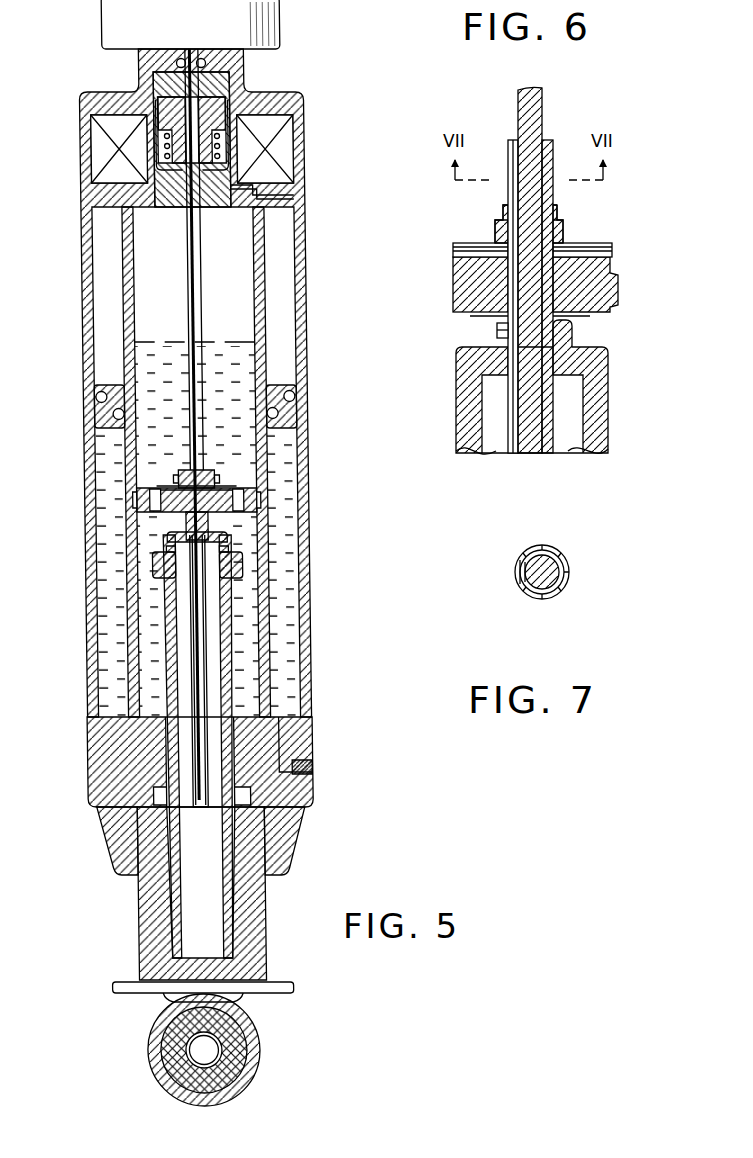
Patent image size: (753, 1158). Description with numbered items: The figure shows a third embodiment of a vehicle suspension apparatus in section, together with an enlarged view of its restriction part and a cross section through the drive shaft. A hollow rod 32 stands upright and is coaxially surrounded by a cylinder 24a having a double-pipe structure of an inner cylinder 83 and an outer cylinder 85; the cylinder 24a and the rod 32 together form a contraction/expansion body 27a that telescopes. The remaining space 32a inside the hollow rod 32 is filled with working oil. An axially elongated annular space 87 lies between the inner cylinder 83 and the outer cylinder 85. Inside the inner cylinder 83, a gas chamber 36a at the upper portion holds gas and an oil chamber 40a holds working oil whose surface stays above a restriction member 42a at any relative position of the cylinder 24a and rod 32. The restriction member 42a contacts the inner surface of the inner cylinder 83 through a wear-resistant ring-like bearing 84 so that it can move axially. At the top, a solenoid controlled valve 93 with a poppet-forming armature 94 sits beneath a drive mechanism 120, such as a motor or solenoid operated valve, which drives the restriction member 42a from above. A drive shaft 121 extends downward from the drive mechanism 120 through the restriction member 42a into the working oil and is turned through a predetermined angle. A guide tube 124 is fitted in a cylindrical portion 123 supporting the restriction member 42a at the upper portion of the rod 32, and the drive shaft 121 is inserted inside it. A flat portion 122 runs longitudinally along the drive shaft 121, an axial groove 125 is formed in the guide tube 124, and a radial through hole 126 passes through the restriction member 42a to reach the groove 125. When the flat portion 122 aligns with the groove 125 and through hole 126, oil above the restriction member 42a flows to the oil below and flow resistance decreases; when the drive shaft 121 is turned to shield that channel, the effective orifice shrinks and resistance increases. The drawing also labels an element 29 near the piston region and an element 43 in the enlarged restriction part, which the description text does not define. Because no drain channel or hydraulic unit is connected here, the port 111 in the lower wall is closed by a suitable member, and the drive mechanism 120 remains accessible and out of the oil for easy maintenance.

In FIG. 5, the drive mechanism 120 is at (89, 15).
In FIG. 5, the armature 94 is at (223, 133).
In FIG. 5, the solenoid controlled valve 93 is at (157, 149).
In FIG. 5, the cylinder 24a is at (165, 383).
In FIG. 5, the drive shaft 121 is at (172, 424).
In FIG. 6, the drive shaft 121 is at (538, 102).
In FIG. 7, the drive shaft 121 is at (556, 560).
In FIG. 5, the outer cylinder 85 is at (311, 296).
In FIG. 5, the inner cylinder 83 is at (242, 462).
In FIG. 5, the gas chamber 36a is at (251, 274).
In FIG. 5, the annular space 87 is at (73, 296).
In FIG. 5, the oil chamber 40a is at (196, 508).
In FIG. 5, the restriction member 42a is at (131, 474).
In FIG. 6, the restriction member 42a is at (495, 232).
In FIG. 5, the piston rod 29 is at (254, 513).
In FIG. 5, the ring-like bearing 84 is at (245, 497).
In FIG. 5, the contraction/expansion body 27a is at (62, 608).
In FIG. 5, the hollow rod 32 is at (130, 746).
In FIG. 6, the hollow rod 32 is at (465, 412).
In FIG. 5, the remaining space 32a is at (282, 671).
In FIG. 5, the port 111 is at (332, 760).
In FIG. 6, the guide tube 124 is at (553, 194).
In FIG. 7, the guide tube 124 is at (553, 593).
In FIG. 6, the cylindrical portion 123 is at (560, 272).
In FIG. 6, the valve body 43 is at (465, 275).
In FIG. 6, the groove 125 is at (515, 300).
In FIG. 7, the groove 125 is at (520, 565).
In FIG. 6, the through hole 126 is at (497, 334).
In FIG. 7, the flat portion 122 is at (521, 575).